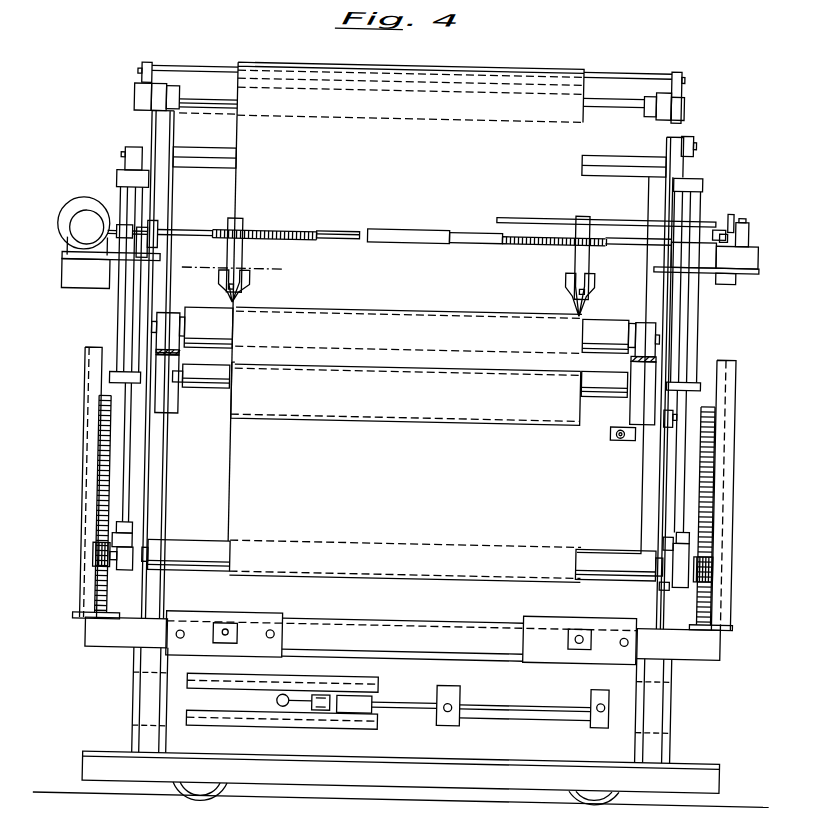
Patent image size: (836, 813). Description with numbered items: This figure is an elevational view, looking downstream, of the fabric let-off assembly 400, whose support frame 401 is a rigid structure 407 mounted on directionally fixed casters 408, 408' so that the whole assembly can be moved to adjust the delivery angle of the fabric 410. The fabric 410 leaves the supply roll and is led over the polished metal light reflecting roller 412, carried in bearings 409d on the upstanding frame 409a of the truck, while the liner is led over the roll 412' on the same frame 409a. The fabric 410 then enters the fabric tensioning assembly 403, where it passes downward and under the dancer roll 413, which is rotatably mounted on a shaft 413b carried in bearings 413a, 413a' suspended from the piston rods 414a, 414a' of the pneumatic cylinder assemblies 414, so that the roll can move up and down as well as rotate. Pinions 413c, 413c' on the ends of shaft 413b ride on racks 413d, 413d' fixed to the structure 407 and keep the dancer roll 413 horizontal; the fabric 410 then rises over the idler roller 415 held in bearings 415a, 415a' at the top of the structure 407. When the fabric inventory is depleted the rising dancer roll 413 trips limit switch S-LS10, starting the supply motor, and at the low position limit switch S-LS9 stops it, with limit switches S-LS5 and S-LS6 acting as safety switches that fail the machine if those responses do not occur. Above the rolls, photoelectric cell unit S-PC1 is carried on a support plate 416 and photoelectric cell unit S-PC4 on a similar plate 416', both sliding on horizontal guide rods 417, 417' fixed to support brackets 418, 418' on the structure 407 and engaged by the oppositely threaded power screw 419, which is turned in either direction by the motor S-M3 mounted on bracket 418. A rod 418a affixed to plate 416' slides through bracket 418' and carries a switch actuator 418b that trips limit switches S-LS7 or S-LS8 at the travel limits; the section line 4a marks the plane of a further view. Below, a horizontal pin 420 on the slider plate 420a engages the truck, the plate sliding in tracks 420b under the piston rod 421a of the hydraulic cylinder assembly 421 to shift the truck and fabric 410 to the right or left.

The fabric let-off assembly 400 is at (627, 56).
The support frame 401 is at (153, 704).
The fabric tensioning assembly 403 is at (98, 342).
The rigid structure 407 is at (645, 513).
The directionally fixed caster 408 is at (209, 780).
The directionally fixed caster 408' is at (580, 787).
The upstanding frame 409a is at (162, 368).
The bearings 409d is at (161, 323).
The fabric 410 is at (273, 103).
The polished metal light reflecting roller 412 is at (408, 328).
The liner roll 412' is at (400, 394).
The dancer roll 413 is at (588, 579).
The bearing 413a is at (163, 542).
The bearing 413a' is at (729, 573).
The dancer roll shaft 413b is at (96, 563).
The pinion 413c is at (67, 568).
The pinion 413c' is at (740, 567).
The rack 413d is at (65, 503).
The rack 413d' is at (741, 517).
The pneumatic cylinder assembly 414 is at (117, 199).
The piston rod 414a is at (77, 457).
The piston rod 414a' is at (732, 462).
The idler roller 415 is at (619, 94).
The bearing 415a is at (122, 87).
The bearing 415a' is at (696, 98).
The support plate 416 is at (256, 250).
The support plate 416' is at (557, 255).
The guide rod 417 is at (414, 236).
The guide rod 417' is at (340, 219).
The support bracket 418 is at (105, 278).
The support bracket 418' is at (710, 276).
The rod 418a is at (602, 216).
The switch actuator 418b is at (731, 216).
The power screw 419 is at (466, 226).
The horizontal pin 420 is at (287, 703).
The slider plate 420a is at (306, 703).
The tracks 420b is at (235, 722).
The hydraulic cylinder assembly 421 is at (494, 719).
The piston rod 421a is at (419, 703).
The section line 4a- 4a is at (189, 281).
The motor S-M3 is at (106, 222).
The limit switch S-LS5 is at (619, 436).
The limit switch S-LS6 is at (670, 578).
The limit switch S-LS7 is at (722, 226).
The limit switch S-LS8 is at (741, 220).
The limit switch S-LS9 is at (666, 538).
The limit switch S-LS10 is at (667, 445).
The photoelectric cell unit S-PC1 is at (248, 290).
The photoelectric cell unit S-PC4 is at (564, 292).